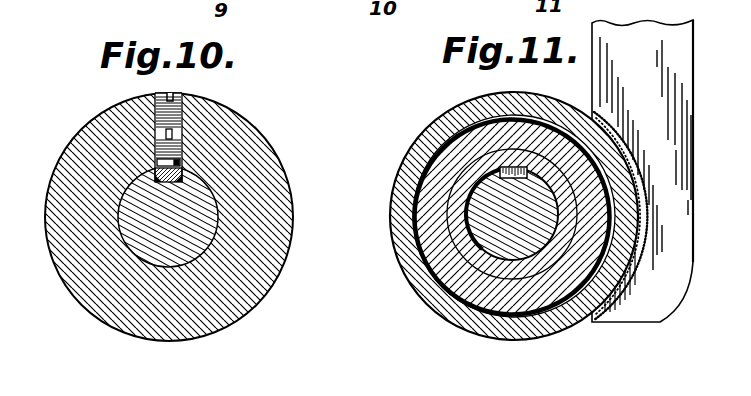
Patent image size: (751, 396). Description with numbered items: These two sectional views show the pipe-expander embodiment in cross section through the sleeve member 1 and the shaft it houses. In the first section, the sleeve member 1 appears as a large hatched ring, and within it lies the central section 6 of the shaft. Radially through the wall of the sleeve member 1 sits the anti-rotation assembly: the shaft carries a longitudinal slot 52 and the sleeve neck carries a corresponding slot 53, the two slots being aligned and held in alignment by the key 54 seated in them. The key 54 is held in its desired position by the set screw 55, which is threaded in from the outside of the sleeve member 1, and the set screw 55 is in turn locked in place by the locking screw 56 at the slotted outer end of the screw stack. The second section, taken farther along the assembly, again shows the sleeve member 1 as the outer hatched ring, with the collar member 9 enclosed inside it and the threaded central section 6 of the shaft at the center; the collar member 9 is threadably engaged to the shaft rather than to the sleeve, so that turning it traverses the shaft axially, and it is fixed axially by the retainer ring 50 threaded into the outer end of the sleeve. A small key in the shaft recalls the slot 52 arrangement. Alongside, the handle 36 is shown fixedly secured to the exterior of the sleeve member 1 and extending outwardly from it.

In FIG. 10, the sleeve member 1 is at (257, 138).
In FIG. 11, the sleeve member 1 is at (453, 111).
In FIG. 10, the central section 6 is at (207, 218).
In FIG. 11, the central section 6 is at (485, 232).
In FIG. 11, the collar member 9 is at (535, 140).
In FIG. 11, the handle 36 is at (694, 110).
In FIG. 11, the retainer ring 50 is at (517, 118).
In FIG. 10, the longitudinal slot 52 is at (156, 165).
In FIG. 11, the longitudinal slot 52 is at (500, 173).
In FIG. 10, the slot 53 is at (148, 163).
In FIG. 10, the key 54 is at (183, 172).
In FIG. 10, the set screw 55 is at (183, 147).
In FIG. 10, the locking screw 56 is at (183, 112).